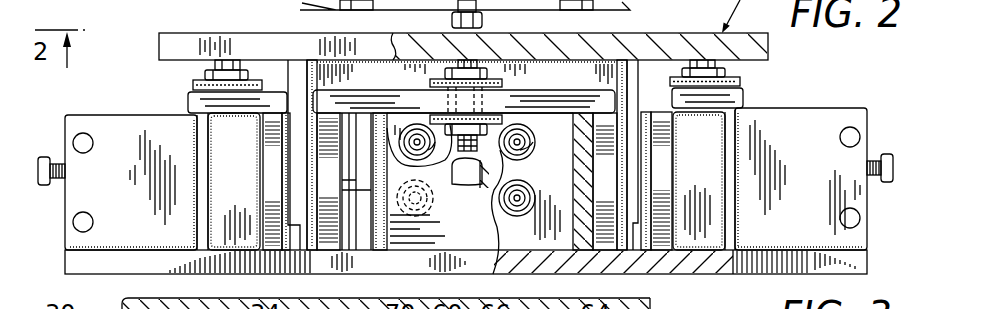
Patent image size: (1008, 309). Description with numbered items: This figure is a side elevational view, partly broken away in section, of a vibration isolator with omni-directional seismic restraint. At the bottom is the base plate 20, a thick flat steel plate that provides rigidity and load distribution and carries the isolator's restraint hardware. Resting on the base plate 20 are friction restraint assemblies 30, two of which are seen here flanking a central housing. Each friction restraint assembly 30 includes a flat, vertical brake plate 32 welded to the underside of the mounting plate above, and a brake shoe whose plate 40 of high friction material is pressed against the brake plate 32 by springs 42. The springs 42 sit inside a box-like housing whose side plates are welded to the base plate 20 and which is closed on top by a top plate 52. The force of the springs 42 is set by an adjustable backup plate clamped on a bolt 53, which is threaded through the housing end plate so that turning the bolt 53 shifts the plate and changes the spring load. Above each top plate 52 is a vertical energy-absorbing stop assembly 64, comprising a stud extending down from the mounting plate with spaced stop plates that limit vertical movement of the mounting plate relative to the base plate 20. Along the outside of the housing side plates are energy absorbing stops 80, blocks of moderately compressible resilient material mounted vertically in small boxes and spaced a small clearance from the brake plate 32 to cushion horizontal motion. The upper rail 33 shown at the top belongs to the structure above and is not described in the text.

The base plate 20 is at (672, 277).
The friction restraint assembly 30 is at (117, 108).
The brake plate 32 is at (633, 80).
The upper rail 33 is at (482, 14).
The plate of high friction material 40 is at (288, 143).
The brake shoe spring 42 is at (416, 125).
The top plate 52 is at (193, 100).
The bolt 53 is at (45, 187).
The vertical energy-absorbing stop assembly 64 is at (259, 70).
The energy absorbing stop 80 is at (288, 187).